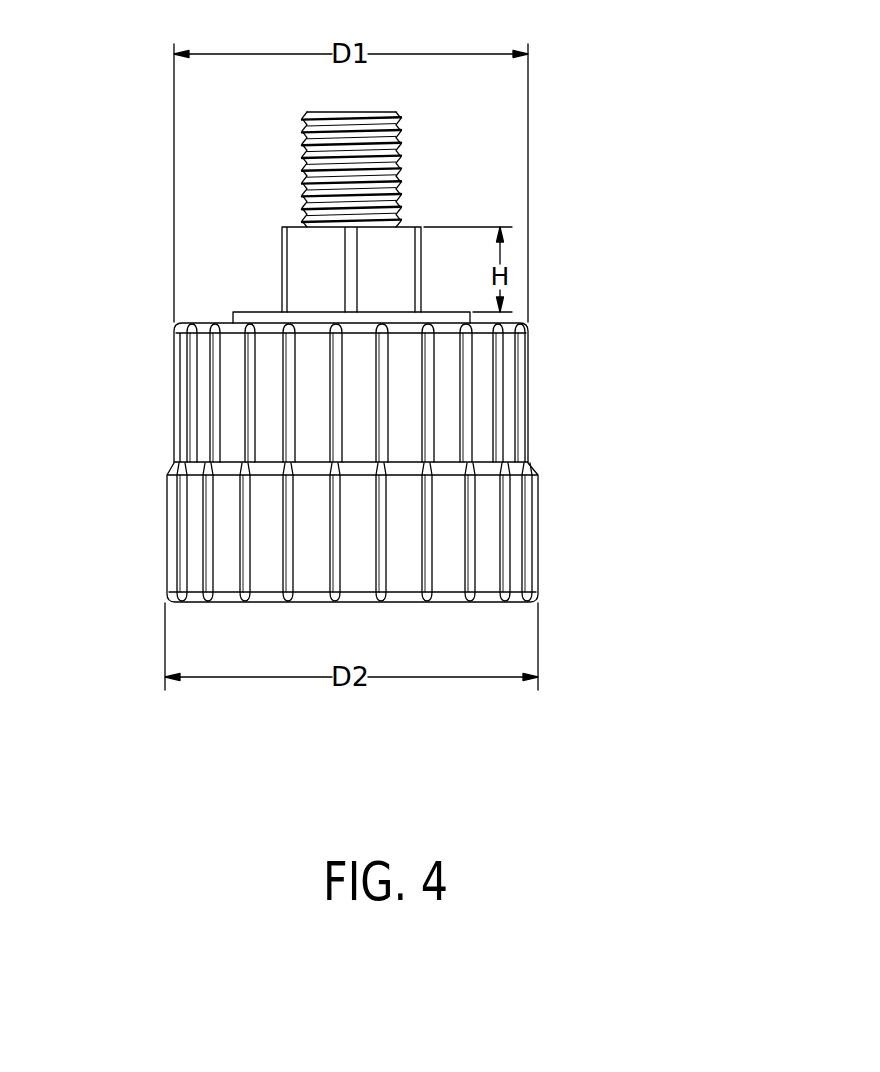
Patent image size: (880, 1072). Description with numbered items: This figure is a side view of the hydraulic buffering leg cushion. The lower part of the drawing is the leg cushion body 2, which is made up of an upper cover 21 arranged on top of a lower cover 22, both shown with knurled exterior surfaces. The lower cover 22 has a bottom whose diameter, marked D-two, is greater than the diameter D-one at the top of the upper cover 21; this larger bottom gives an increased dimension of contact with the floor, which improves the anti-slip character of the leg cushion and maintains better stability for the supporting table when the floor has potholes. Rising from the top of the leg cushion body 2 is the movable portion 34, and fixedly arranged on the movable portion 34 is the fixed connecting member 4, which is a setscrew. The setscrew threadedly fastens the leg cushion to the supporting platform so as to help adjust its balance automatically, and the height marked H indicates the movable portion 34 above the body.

The leg cushion body 2 is at (95, 397).
The upper cover 21 is at (188, 420).
The lower cover 22 is at (176, 507).
The movable portion 34 is at (304, 261).
The fixed connecting member 4 is at (307, 177).